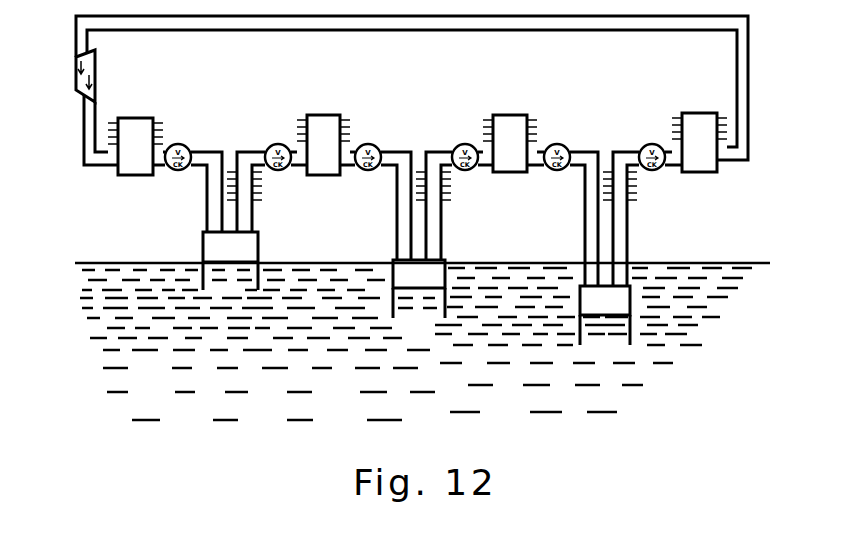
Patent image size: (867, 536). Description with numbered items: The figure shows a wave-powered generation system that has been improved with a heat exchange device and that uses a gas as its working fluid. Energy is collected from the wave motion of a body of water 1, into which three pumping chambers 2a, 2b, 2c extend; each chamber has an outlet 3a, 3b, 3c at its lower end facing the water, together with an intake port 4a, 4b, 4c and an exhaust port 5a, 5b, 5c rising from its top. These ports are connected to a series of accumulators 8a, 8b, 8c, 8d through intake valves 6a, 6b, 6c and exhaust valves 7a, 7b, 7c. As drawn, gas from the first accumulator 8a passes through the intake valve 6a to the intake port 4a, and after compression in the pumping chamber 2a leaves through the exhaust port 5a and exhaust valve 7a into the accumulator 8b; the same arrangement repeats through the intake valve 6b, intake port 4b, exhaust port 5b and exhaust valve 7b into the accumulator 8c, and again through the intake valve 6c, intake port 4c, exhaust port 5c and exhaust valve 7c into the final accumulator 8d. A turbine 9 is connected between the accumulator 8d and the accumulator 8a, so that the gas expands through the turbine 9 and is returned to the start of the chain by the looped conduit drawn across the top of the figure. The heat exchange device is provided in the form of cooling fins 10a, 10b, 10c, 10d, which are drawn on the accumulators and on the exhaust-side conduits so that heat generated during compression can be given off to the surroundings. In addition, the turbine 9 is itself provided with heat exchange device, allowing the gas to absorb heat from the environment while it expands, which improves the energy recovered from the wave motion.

The body of water 1 is at (154, 391).
The pumping chamber 2a is at (234, 257).
The pumping chamber 2b is at (424, 284).
The pumping chamber 2c is at (610, 310).
The outlet 3a is at (232, 300).
The outlet 3b is at (422, 329).
The outlet 3c is at (610, 356).
The intake port 4a is at (212, 229).
The intake port 4b is at (398, 258).
The intake port 4c is at (588, 283).
The exhaust port 5a is at (250, 229).
The exhaust port 5b is at (433, 258).
The exhaust port 5c is at (627, 283).
The intake valve 6a is at (190, 148).
The intake valve 6b is at (386, 145).
The intake valve 6c is at (567, 143).
The exhaust valve 7a is at (272, 147).
The exhaust valve 7b is at (458, 142).
The exhaust valve 7c is at (643, 142).
The accumulator 8a is at (139, 150).
The accumulator 8b is at (327, 148).
The accumulator 8c is at (513, 148).
The accumulator 8d is at (702, 146).
The turbine 9 is at (76, 94).
The cooling fins 10a is at (157, 117).
The cooling fins 10b is at (344, 113).
The cooling fins 10c is at (490, 115).
The cooling fins 10d is at (677, 113).